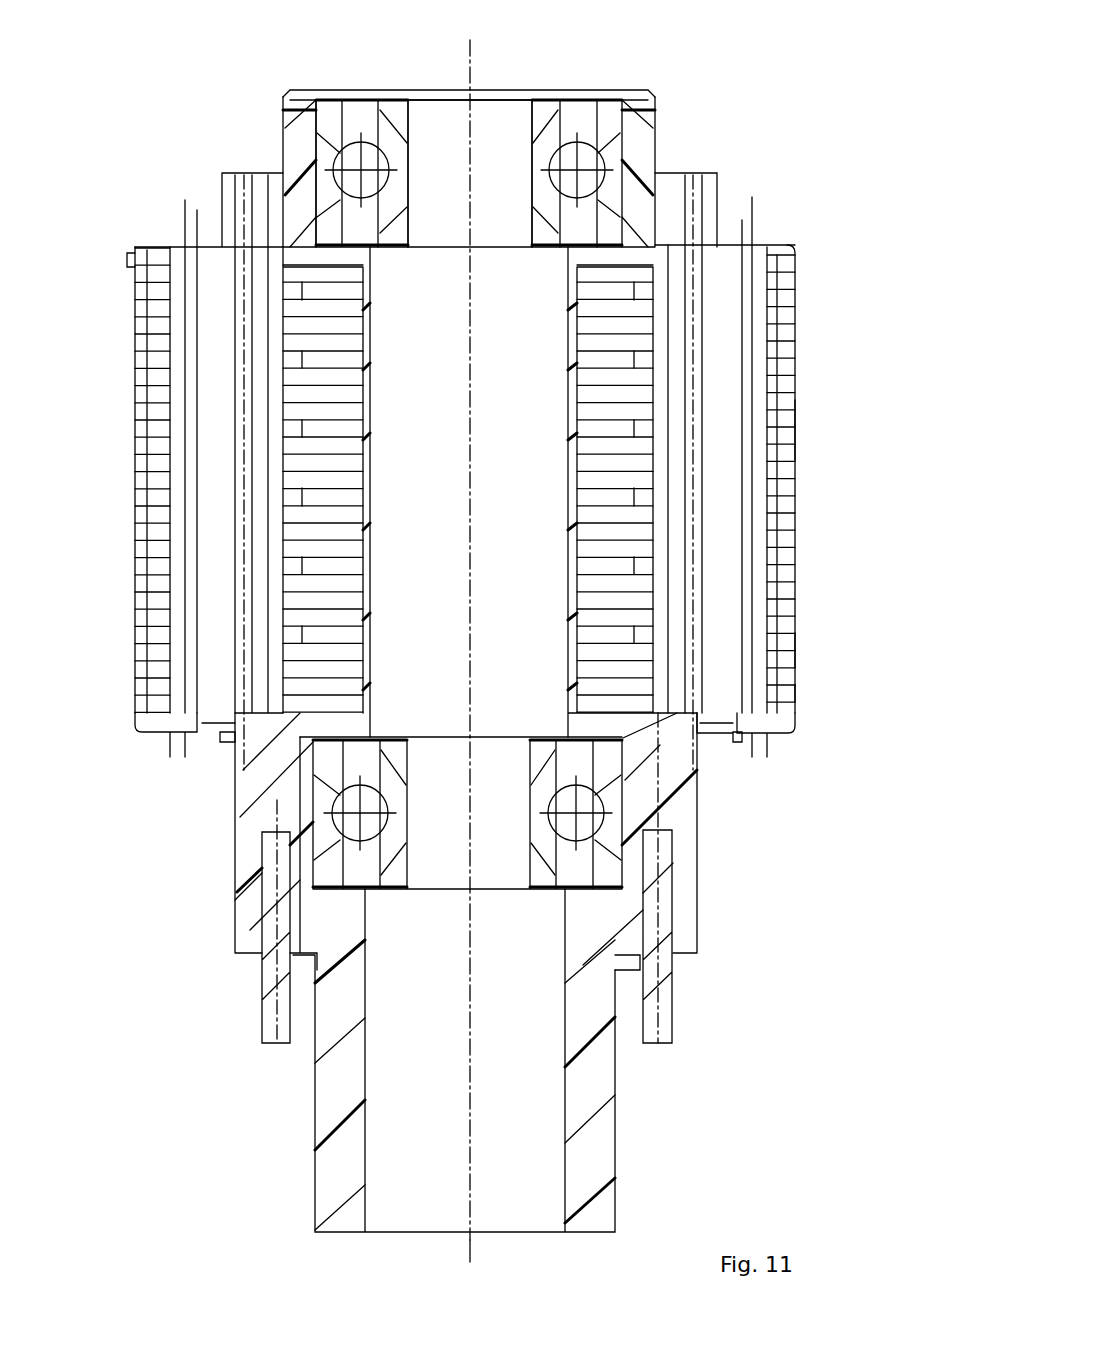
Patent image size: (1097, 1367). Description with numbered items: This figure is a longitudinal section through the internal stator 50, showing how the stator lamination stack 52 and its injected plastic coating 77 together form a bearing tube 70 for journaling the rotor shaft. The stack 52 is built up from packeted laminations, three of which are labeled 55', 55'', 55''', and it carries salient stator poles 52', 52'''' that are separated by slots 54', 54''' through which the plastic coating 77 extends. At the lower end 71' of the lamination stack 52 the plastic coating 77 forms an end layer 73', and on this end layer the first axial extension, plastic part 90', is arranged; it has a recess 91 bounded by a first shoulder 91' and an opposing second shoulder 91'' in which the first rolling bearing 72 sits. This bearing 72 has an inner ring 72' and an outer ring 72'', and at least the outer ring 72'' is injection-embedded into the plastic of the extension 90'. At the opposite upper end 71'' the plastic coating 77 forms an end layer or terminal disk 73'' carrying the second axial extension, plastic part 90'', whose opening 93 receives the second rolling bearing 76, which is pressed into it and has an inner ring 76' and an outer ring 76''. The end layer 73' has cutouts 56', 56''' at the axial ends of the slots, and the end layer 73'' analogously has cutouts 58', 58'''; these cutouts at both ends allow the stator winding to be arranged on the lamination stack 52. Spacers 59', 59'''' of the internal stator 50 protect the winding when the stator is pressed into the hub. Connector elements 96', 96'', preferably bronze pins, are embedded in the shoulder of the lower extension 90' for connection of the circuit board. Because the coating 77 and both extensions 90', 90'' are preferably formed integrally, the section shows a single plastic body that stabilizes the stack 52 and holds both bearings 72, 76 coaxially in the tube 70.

The internal stator 50 is at (740, 104).
The stator lamination stack 52 is at (830, 428).
The stator pole 52' is at (121, 461).
The stator pole 52'''' is at (848, 478).
The slot 54' is at (141, 456).
The slot 54''' is at (803, 455).
The lamination 55' is at (852, 635).
The lamination 55'' is at (855, 666).
The lamination 55''' is at (858, 705).
The cutout 56' is at (152, 749).
The cutout 56''' is at (810, 767).
The cutout 58' is at (177, 436).
The cutout 58''' is at (803, 444).
The spacer 59' is at (177, 171).
The spacer 59'''' is at (791, 203).
The bearing tube 70 is at (470, 1262).
The lower end of stator lamination stack 71' is at (766, 833).
The upper end of stator lamination stack 71'' is at (766, 409).
The rolling bearing 72 is at (461, 848).
The inner ring 72' is at (747, 939).
The outer ring 72'' is at (762, 826).
The end layer 73' is at (823, 743).
The end layer 73'' is at (102, 269).
The rolling bearing 76 is at (475, 125).
The inner ring 76' is at (469, 125).
The outer ring 76'' is at (646, 124).
The plastic coating 77 is at (367, 302).
The plastic part 90' is at (602, 1060).
The plastic part 90'' is at (265, 125).
The recess 91 is at (191, 821).
The first shoulder 91' is at (193, 841).
The second shoulder 91'' is at (192, 899).
The opening 93 is at (333, 112).
The connector element 96' is at (180, 937).
The connector element 96'' is at (780, 936).